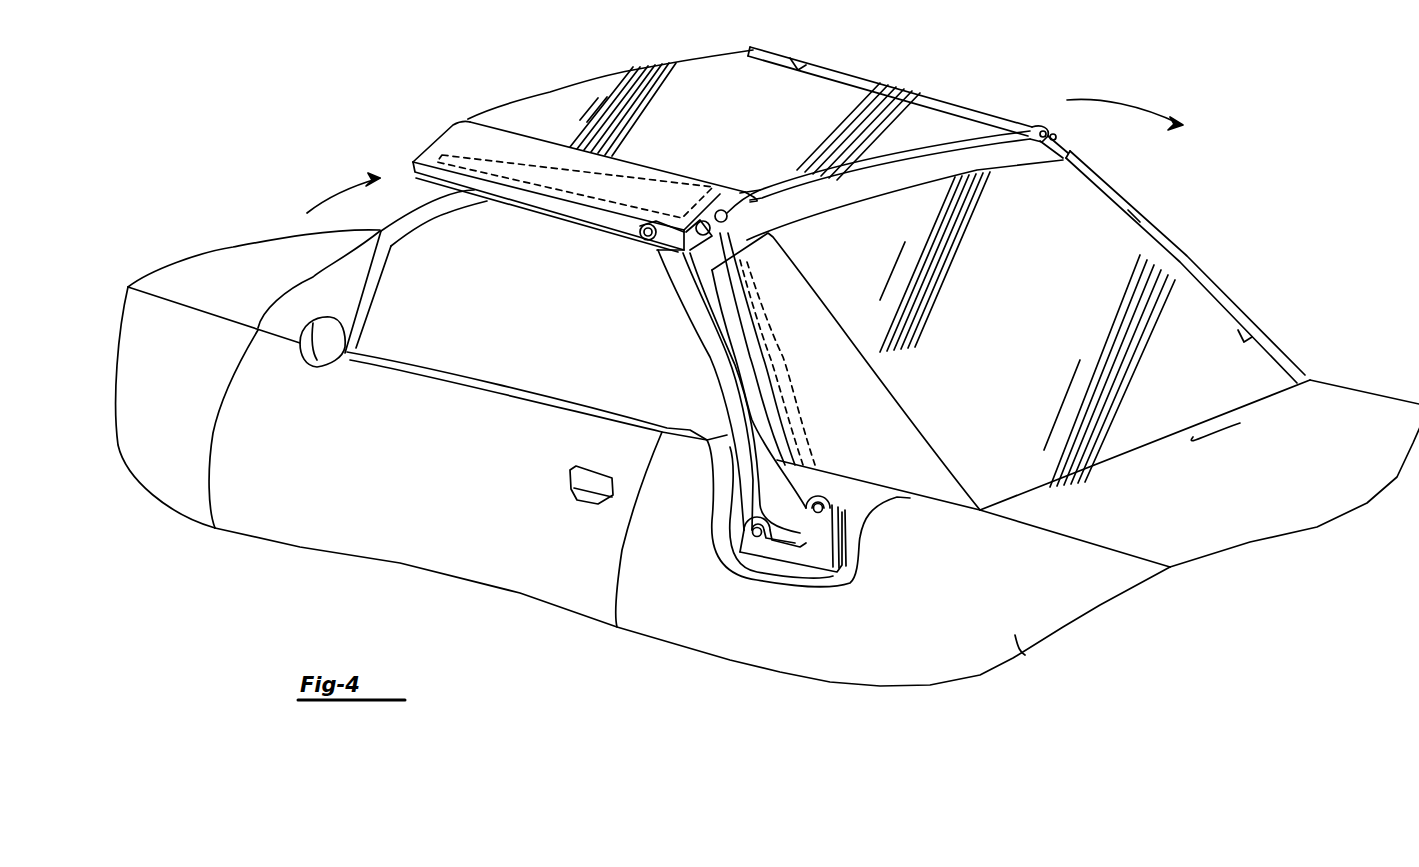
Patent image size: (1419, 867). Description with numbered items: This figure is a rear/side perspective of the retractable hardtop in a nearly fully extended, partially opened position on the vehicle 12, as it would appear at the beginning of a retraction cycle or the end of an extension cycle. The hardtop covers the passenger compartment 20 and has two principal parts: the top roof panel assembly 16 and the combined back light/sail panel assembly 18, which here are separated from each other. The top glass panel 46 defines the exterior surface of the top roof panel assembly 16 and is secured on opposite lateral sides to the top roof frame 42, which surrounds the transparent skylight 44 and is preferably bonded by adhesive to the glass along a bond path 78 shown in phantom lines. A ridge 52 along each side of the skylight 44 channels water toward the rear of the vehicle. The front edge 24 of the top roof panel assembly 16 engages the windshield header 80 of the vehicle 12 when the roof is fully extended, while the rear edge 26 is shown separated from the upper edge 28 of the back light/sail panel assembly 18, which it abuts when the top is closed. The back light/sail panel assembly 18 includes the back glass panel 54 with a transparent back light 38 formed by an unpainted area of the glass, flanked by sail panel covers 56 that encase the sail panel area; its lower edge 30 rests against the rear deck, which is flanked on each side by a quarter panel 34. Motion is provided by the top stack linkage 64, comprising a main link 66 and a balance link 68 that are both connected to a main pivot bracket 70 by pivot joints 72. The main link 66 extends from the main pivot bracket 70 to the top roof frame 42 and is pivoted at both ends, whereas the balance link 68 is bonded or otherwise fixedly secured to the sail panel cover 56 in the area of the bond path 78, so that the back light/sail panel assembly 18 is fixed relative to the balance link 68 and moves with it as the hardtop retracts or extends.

The vehicle 12 is at (234, 264).
The top roof panel assembly 16 is at (611, 103).
The back light/sail panel assembly 18 is at (1183, 245).
The passenger compartment 20 is at (505, 245).
The front edge 24 is at (550, 90).
The rear edge 26 is at (922, 147).
The upper edge 28 is at (905, 199).
The lower edge 30 is at (1240, 423).
The quarter panel 34 is at (1025, 655).
The back light 38 is at (1051, 311).
The top roof frame 42 is at (580, 220).
The skylight 44 is at (751, 155).
The top glass panel 46 is at (840, 82).
The ridge 52 is at (797, 66).
The back glass panel 54 is at (1133, 217).
The sail panel cover 56 is at (912, 418).
The top stack linkage 64 is at (704, 391).
The main link 66 is at (700, 335).
The balance link 68 is at (808, 482).
The main pivot bracket 70 is at (814, 525).
The pivot joint 72 is at (648, 236).
The bond path 78 is at (473, 137).
The windshield header 80 is at (428, 230).